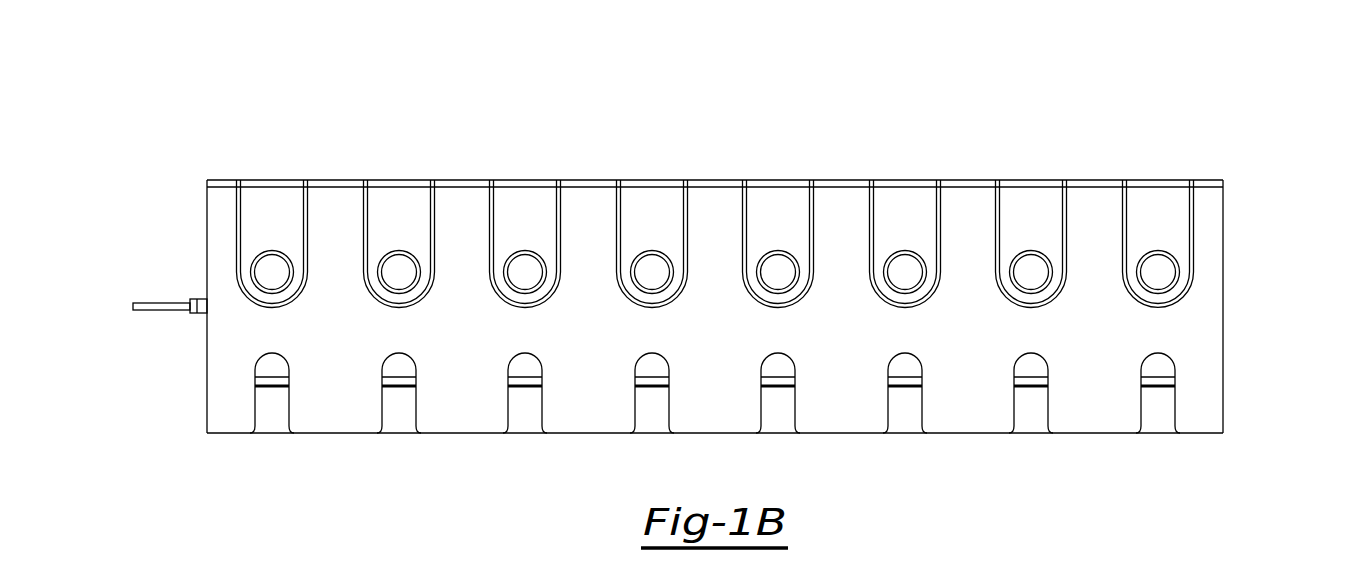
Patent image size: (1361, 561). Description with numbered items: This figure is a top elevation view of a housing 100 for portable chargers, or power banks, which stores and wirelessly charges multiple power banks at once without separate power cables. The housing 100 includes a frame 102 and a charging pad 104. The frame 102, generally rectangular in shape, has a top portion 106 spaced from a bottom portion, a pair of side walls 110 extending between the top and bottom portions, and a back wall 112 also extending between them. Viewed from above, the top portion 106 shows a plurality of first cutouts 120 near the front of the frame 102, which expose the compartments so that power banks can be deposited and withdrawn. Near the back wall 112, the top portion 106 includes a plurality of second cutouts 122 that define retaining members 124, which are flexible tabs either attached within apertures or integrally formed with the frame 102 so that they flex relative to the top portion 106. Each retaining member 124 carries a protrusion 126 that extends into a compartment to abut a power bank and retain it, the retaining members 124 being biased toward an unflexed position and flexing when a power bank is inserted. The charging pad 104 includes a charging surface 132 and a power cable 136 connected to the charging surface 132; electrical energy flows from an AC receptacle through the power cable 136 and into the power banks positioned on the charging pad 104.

The housing 100 is at (962, 120).
The frame 102 is at (1207, 180).
The charging pad 104 is at (525, 380).
The top portion 106 is at (232, 370).
The side walls 110 is at (207, 218).
The back wall 112 is at (222, 180).
The first cutouts 120 is at (398, 419).
The second cutouts 122 is at (363, 210).
The retaining members 124 is at (270, 210).
The protrusion 126 is at (390, 281).
The charging surface 132 is at (653, 363).
The power cable 136 is at (151, 300).